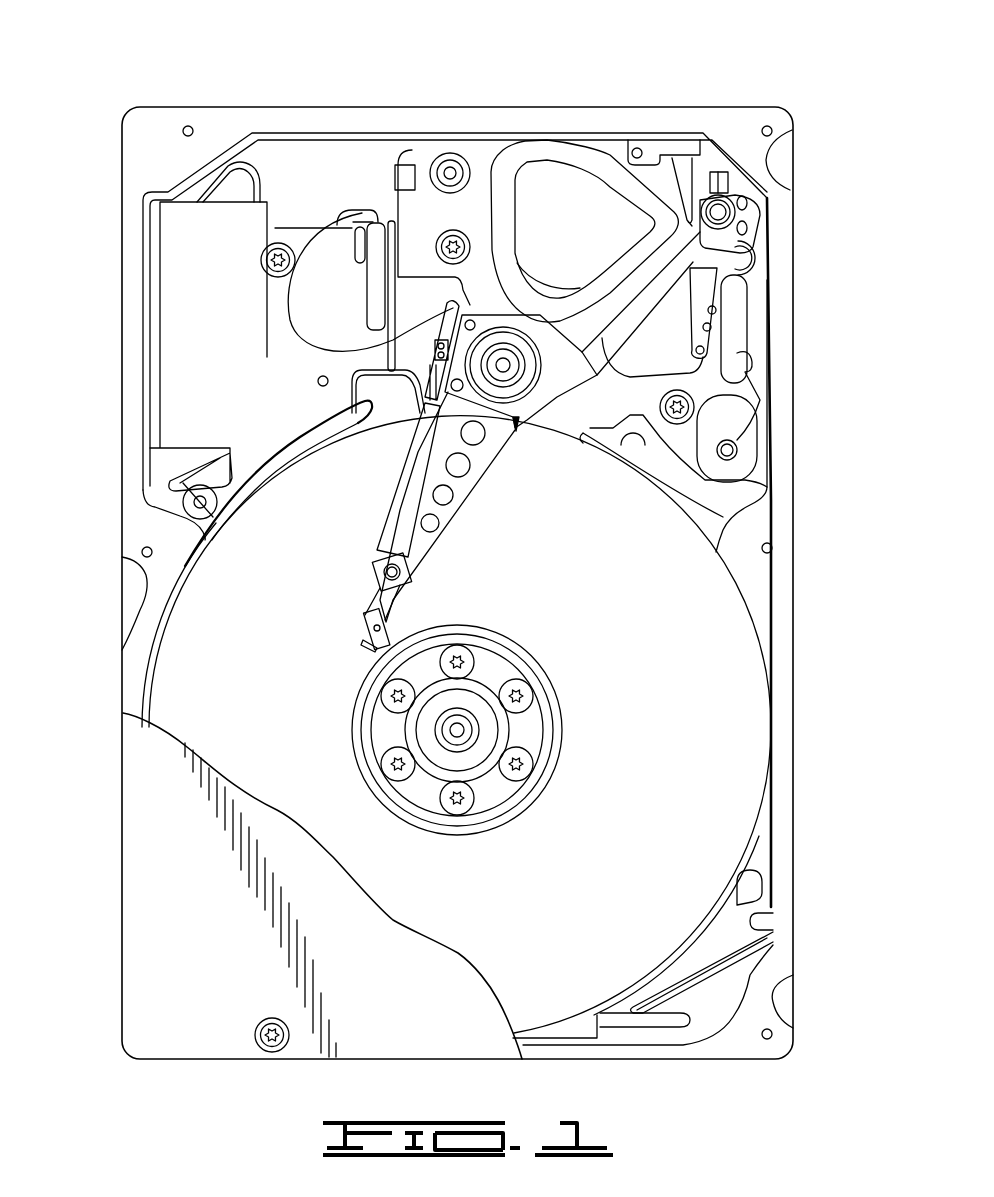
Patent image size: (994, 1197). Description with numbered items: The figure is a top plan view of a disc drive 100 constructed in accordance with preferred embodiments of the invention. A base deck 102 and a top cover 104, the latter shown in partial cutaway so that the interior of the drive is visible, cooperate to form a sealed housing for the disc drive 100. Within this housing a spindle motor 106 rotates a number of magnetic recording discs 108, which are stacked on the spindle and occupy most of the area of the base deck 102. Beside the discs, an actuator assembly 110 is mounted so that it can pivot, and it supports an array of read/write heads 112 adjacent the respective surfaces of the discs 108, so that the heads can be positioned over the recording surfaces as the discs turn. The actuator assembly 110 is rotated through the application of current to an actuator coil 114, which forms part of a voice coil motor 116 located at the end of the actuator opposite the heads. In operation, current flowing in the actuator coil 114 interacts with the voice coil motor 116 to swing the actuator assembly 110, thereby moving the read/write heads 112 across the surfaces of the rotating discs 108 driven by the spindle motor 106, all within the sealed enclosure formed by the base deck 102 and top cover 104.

The disc drive 100 is at (187, 75).
The base deck 102 is at (290, 355).
The top cover 104 is at (150, 770).
The spindle motor 106 is at (480, 698).
The magnetic recording discs 108 is at (710, 725).
The actuator assembly 110 is at (518, 432).
The read/write heads 112 is at (370, 642).
The actuator coil 114 is at (565, 155).
The voice coil motor (VCM) 116 is at (610, 148).